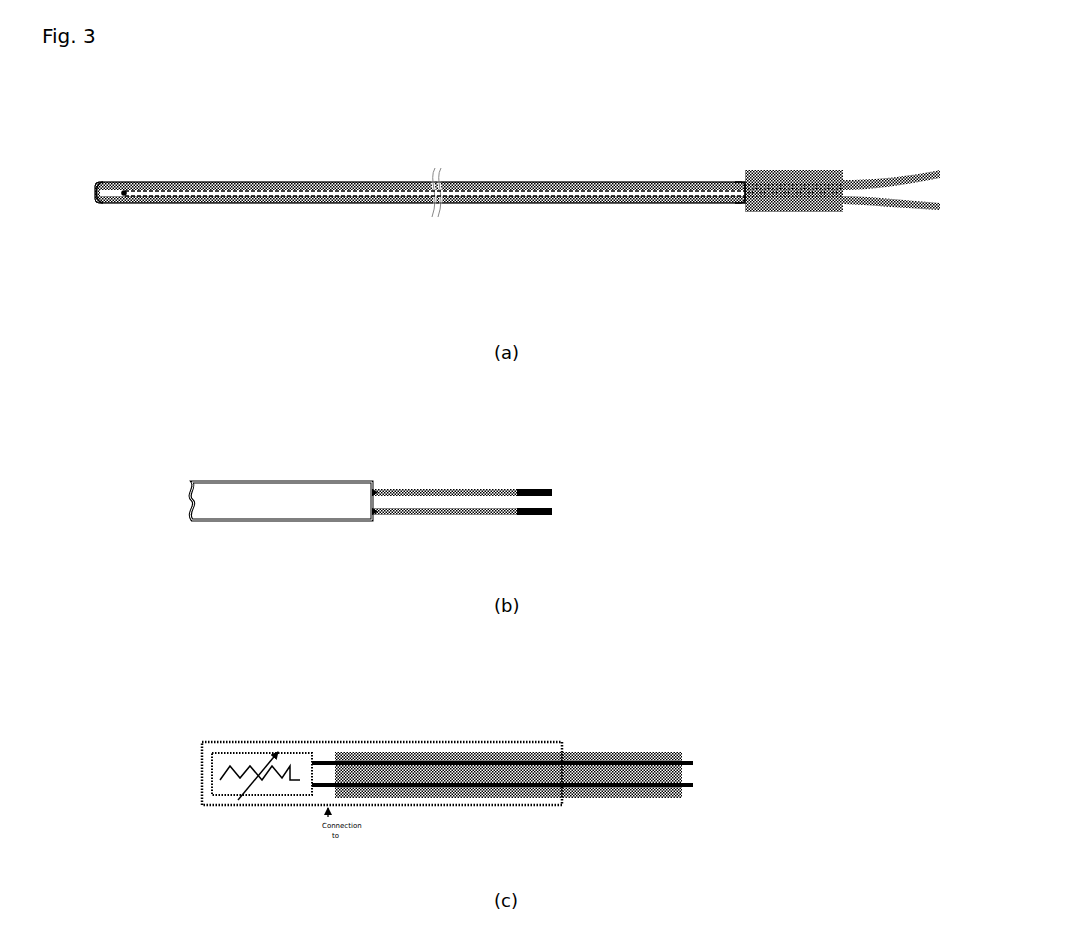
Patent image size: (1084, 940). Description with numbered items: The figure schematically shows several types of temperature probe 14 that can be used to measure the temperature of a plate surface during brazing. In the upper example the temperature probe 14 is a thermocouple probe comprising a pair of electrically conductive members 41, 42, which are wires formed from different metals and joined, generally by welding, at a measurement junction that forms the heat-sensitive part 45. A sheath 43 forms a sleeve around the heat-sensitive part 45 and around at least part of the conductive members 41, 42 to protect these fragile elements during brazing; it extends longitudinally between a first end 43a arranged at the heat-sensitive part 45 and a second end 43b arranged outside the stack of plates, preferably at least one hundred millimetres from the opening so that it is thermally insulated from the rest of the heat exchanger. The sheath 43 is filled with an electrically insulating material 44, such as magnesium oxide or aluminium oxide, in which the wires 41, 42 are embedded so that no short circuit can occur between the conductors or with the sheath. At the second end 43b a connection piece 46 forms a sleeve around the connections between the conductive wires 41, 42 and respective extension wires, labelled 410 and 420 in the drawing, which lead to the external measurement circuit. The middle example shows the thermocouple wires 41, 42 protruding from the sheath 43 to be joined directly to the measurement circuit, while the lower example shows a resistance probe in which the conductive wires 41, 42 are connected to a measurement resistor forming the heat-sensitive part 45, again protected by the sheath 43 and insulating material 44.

The temperature probe 14 is at (245, 126).
The electrically conductive member 41 is at (196, 200).
The electrically conductive member 42 is at (183, 187).
The sheath 43 is at (475, 205).
The first end of the sheath 43a is at (101, 184).
The second end of the sheath 43b is at (740, 188).
The electrically insulating material 44 is at (548, 188).
The heat-sensitive part 45 is at (127, 196).
The connection piece 46 is at (790, 190).
The first lead wire terminal 410 is at (888, 206).
The second lead wire terminal 420 is at (900, 176).